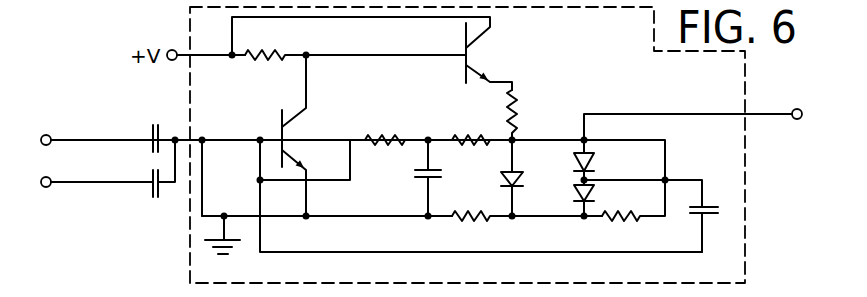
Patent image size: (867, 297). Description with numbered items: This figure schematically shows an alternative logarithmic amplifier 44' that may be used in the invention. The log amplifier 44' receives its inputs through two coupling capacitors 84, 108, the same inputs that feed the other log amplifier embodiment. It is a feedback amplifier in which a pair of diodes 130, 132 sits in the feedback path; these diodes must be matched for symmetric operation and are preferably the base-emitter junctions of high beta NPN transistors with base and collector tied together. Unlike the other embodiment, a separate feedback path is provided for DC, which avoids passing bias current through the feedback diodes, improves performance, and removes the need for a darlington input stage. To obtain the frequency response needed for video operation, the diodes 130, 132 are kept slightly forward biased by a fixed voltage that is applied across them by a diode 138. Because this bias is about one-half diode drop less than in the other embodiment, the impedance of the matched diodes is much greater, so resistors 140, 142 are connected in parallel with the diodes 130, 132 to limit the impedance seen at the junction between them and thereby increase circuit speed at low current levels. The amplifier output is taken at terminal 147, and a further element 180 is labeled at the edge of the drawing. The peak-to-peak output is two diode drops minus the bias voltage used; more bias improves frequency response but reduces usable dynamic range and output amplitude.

The log amplifier 44' is at (434, 145).
The capacitor 108 is at (148, 132).
The capacitor 84 is at (148, 178).
The diode 138 is at (504, 181).
The diode 130 is at (575, 164).
The diode 132 is at (575, 194).
The resistor 140 is at (645, 145).
The resistor 142 is at (644, 210).
The output terminal 147 is at (792, 112).
The partially visible reference 180 is at (57, 293).